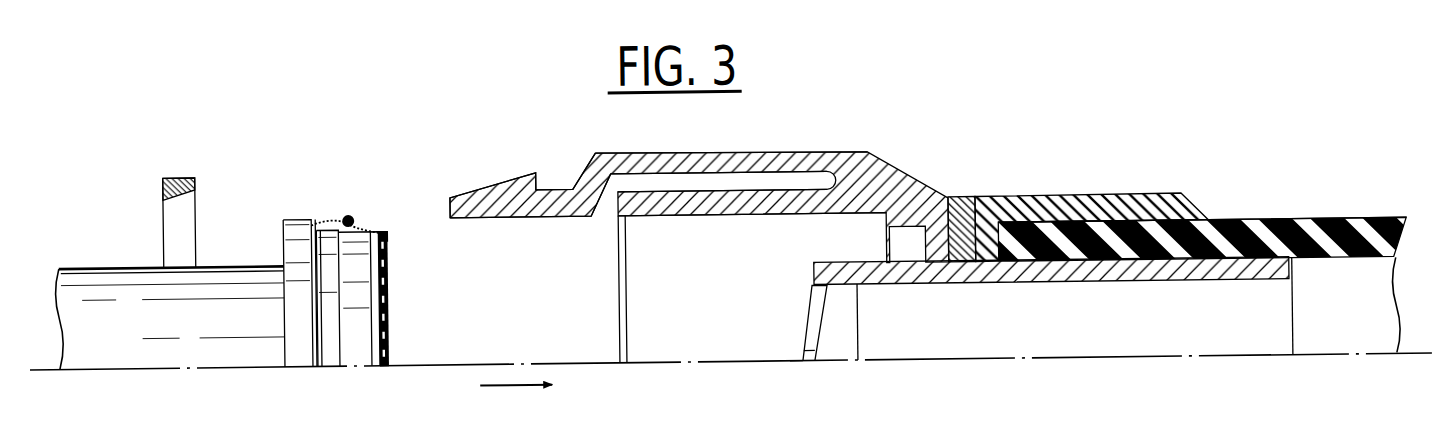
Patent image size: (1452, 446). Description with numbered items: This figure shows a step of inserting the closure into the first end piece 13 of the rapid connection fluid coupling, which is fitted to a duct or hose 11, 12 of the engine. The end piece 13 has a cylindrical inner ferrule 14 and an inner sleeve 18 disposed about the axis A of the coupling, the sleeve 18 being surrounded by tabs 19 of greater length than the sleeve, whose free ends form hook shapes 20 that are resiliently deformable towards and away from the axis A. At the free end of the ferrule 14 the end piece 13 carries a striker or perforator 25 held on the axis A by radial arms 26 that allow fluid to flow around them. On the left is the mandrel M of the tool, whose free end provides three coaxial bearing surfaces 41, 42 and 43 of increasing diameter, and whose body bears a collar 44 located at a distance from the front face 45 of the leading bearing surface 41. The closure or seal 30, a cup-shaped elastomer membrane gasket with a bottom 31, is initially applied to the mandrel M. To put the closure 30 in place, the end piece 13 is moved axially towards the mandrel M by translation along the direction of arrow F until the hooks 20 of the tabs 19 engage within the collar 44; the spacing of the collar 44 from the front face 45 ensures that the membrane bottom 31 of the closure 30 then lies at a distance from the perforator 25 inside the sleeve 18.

The duct or hose 11 is at (1281, 232).
The duct or hose 12 is at (1202, 219).
The end piece 13 is at (939, 192).
The cylindrical inner ferrule 14 is at (1145, 297).
The inner sleeve 18 is at (726, 216).
The tabs 19 is at (788, 157).
The hook shapes 20 is at (562, 186).
The striker or perforator 25 is at (793, 372).
The radial arms 26 is at (818, 332).
The closure or seal 30 is at (394, 321).
The bottom 31 is at (388, 373).
The leading bearing surface 41 is at (378, 230).
The bearing surface 42 is at (324, 222).
The bearing surface 43 is at (305, 225).
The collar 44 is at (204, 180).
The front face 45 is at (393, 292).
The mandrel M is at (228, 378).
The arrow F is at (516, 402).
The axis A is at (1217, 368).